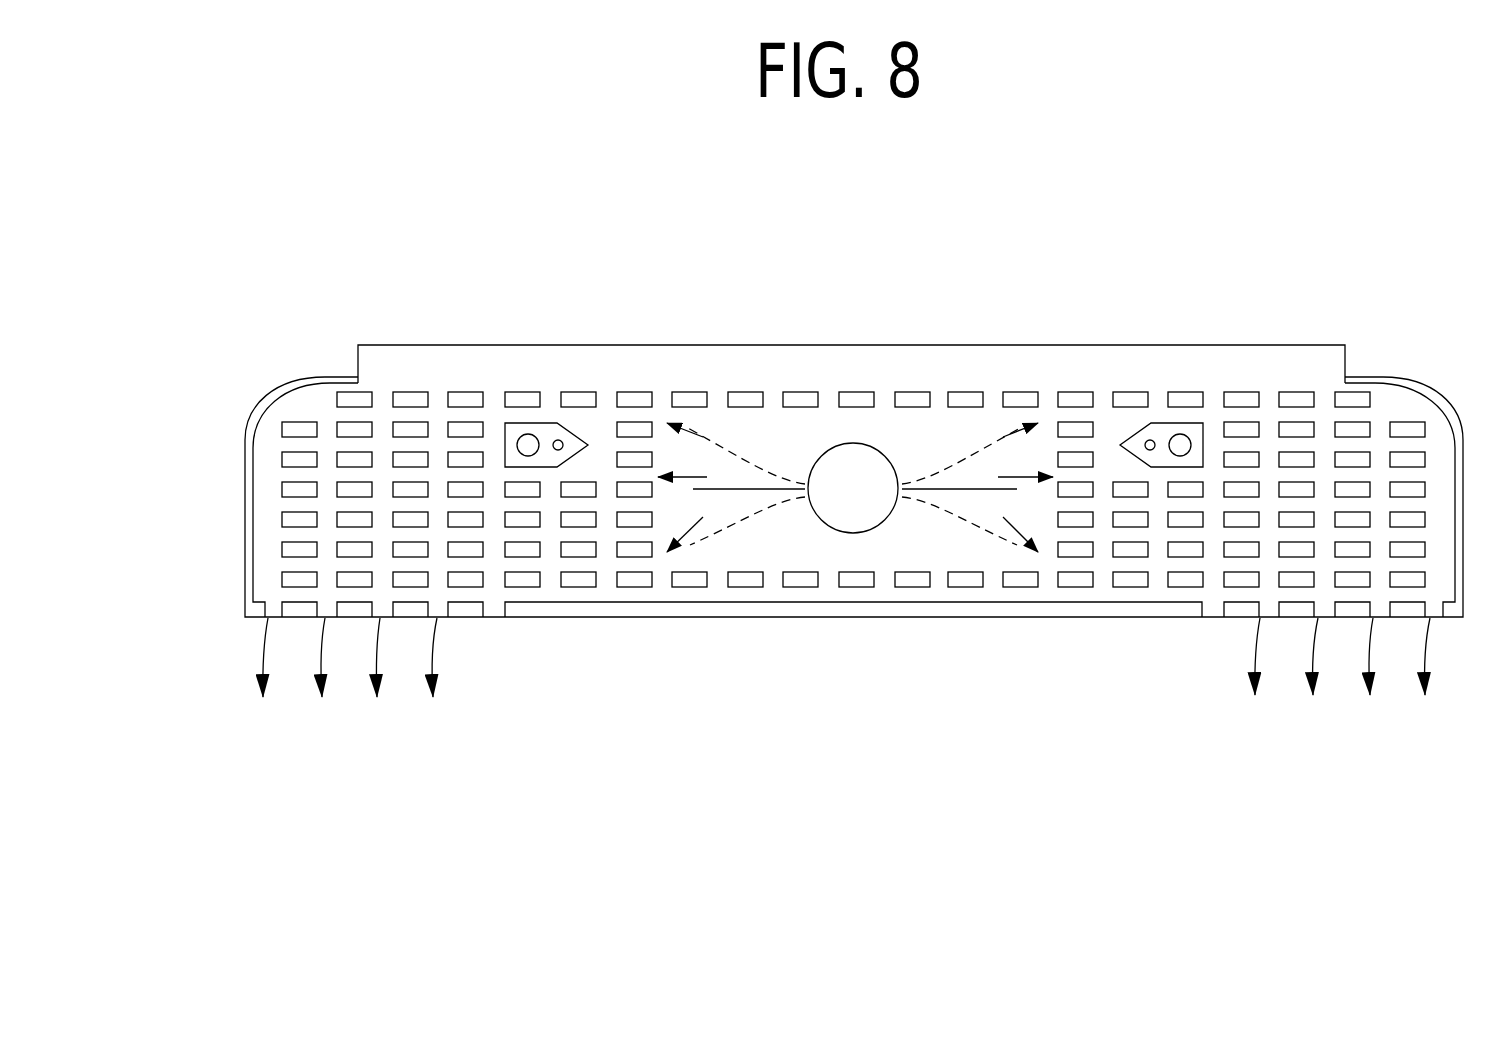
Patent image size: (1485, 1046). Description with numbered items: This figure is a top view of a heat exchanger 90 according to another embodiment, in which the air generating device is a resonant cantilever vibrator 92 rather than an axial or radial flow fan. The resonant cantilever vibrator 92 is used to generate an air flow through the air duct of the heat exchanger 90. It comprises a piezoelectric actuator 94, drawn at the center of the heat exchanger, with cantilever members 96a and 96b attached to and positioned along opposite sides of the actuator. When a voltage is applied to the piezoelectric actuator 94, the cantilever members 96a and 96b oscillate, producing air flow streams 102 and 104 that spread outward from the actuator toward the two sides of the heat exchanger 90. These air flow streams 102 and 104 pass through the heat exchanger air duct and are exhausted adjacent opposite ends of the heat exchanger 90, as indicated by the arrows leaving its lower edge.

The heat exchanger 90 is at (590, 178).
The resonant cantilever vibrator 92 is at (245, 510).
The piezoelectric actuator 94 is at (834, 504).
The cantilever member 96a is at (748, 460).
The cantilever member 96b is at (963, 460).
The air flow stream 102 is at (680, 557).
The air flow stream 104 is at (1026, 555).